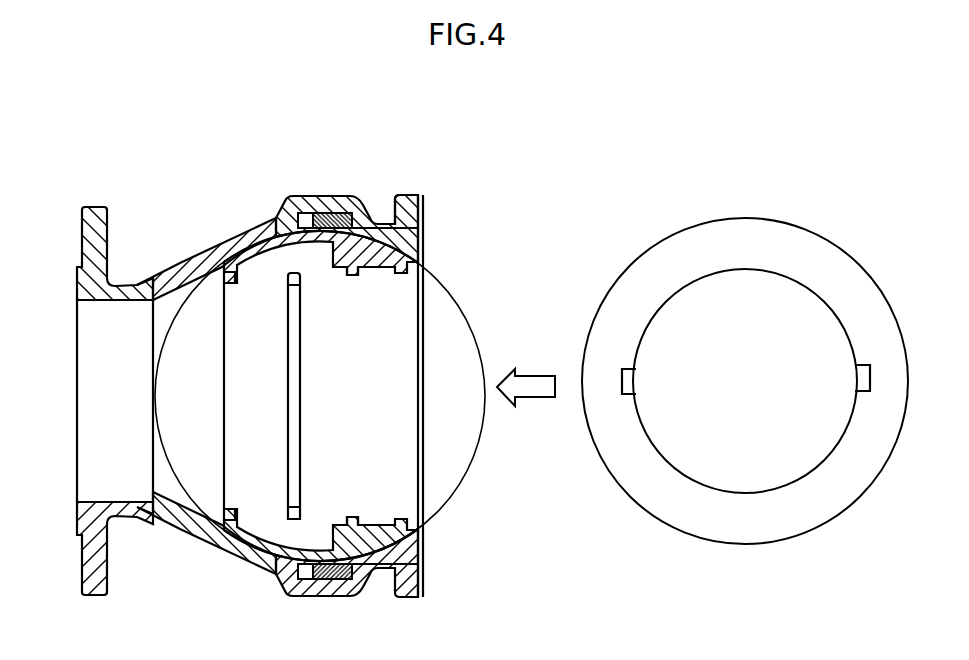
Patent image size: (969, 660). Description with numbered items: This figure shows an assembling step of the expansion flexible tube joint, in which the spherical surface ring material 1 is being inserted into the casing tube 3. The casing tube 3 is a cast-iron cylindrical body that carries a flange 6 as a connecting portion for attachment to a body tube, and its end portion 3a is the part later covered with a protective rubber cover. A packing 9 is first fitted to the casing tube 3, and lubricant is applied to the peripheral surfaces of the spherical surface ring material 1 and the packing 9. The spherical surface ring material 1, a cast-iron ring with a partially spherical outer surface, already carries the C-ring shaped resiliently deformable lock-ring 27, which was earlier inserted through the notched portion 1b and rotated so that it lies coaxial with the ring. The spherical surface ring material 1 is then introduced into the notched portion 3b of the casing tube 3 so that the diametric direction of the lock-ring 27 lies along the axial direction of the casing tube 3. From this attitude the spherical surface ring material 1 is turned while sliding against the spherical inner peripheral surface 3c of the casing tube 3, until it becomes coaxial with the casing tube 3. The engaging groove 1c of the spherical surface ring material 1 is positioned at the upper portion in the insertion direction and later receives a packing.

The spherical surface ring material 1 is at (263, 558).
The notched portion 1b is at (640, 386).
The engaging groove 1c is at (375, 278).
The casing tube 3 is at (227, 247).
The end portion 3a is at (412, 194).
The notched portion 3b is at (405, 237).
The spherical inner peripheral surface 3c is at (265, 272).
The flange 6 is at (82, 217).
The packing 9 is at (320, 196).
The lock-ring 27 is at (302, 512).